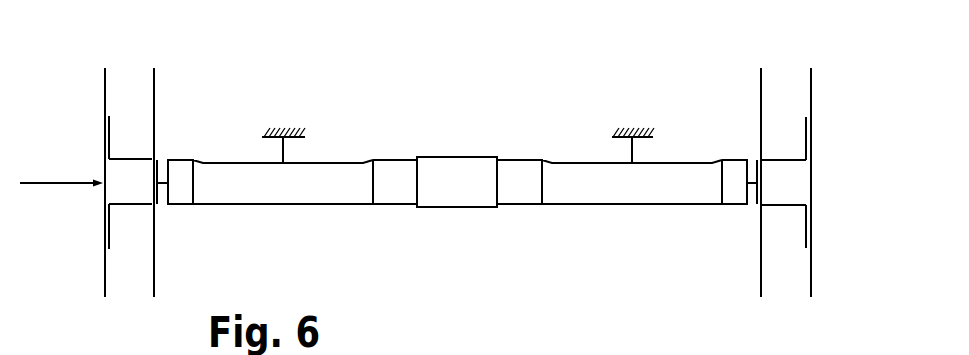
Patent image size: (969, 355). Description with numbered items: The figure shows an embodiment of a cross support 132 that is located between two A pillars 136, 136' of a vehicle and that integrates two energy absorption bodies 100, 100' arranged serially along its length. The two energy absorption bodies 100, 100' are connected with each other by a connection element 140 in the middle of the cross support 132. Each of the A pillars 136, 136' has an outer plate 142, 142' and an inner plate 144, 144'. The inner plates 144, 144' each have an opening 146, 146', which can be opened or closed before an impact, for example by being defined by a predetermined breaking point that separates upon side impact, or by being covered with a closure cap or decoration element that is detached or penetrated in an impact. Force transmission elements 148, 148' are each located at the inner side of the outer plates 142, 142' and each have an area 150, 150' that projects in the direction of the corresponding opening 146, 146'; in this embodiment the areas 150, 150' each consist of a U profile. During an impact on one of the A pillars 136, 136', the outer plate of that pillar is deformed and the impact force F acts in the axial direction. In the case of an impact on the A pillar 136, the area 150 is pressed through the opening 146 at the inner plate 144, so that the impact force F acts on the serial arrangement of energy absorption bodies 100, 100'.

The impact force F is at (73, 183).
The energy absorption body 100 is at (292, 150).
The energy absorption body 100' is at (622, 151).
The cross support 132 is at (457, 147).
The A pillar 136 is at (133, 156).
The A pillar 136' is at (784, 155).
The connection element 140 is at (452, 202).
The outer plate 142 is at (68, 180).
The outer plate 142' is at (850, 180).
The inner plate 144 is at (195, 180).
The inner plate 144' is at (720, 180).
The opening 146 is at (185, 156).
The opening 146' is at (735, 156).
The force transmission element 148 is at (70, 186).
The force transmission element 148' is at (845, 192).
The area 150 is at (172, 207).
The area 150' is at (742, 208).